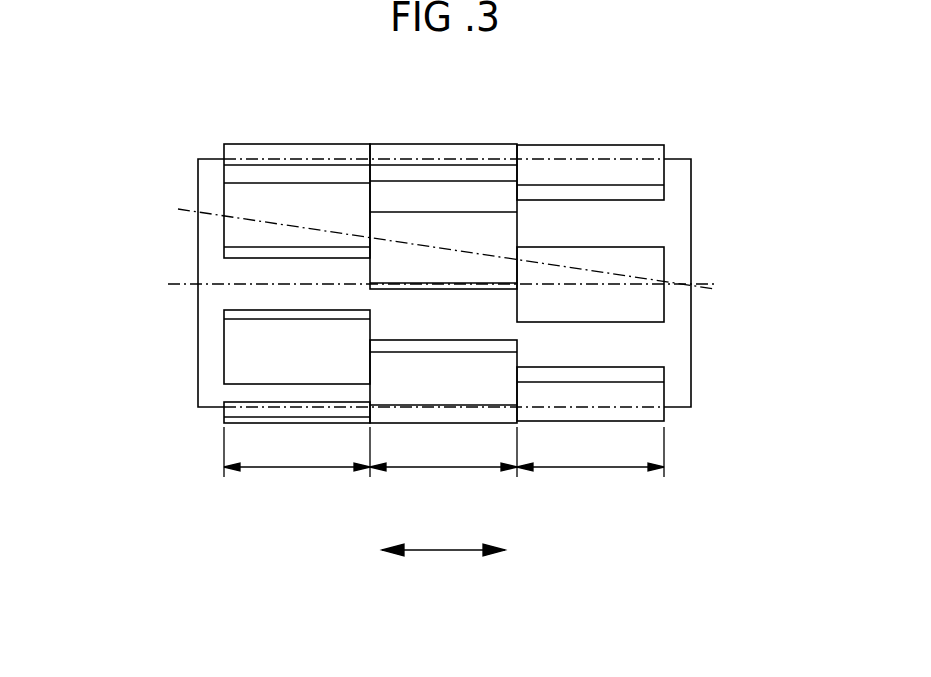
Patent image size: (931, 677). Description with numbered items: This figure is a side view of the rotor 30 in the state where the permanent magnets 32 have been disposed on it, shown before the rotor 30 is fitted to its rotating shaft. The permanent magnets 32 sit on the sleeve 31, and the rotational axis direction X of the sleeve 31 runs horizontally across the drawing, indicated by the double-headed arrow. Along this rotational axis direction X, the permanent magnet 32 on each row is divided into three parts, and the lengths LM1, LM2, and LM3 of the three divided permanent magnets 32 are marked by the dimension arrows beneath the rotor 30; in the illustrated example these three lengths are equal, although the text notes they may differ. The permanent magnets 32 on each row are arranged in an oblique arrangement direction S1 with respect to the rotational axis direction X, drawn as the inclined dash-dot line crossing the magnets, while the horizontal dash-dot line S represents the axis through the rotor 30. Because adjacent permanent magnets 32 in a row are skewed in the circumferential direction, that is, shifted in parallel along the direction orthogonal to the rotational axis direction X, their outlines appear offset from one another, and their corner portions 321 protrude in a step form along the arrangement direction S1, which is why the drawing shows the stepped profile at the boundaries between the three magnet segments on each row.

The rotor 30 is at (693, 158).
The sleeve 31 is at (692, 178).
The permanent magnet 32 is at (287, 187).
The corner portion 321 is at (224, 183).
The optical axis S is at (168, 284).
The arrangement direction S1 is at (178, 209).
The length of first divided permanent magnet LM1 is at (297, 463).
The length of second divided permanent magnet LM2 is at (443, 463).
The length of third divided permanent magnet LM3 is at (590, 463).
The rotational axis direction X is at (443, 550).